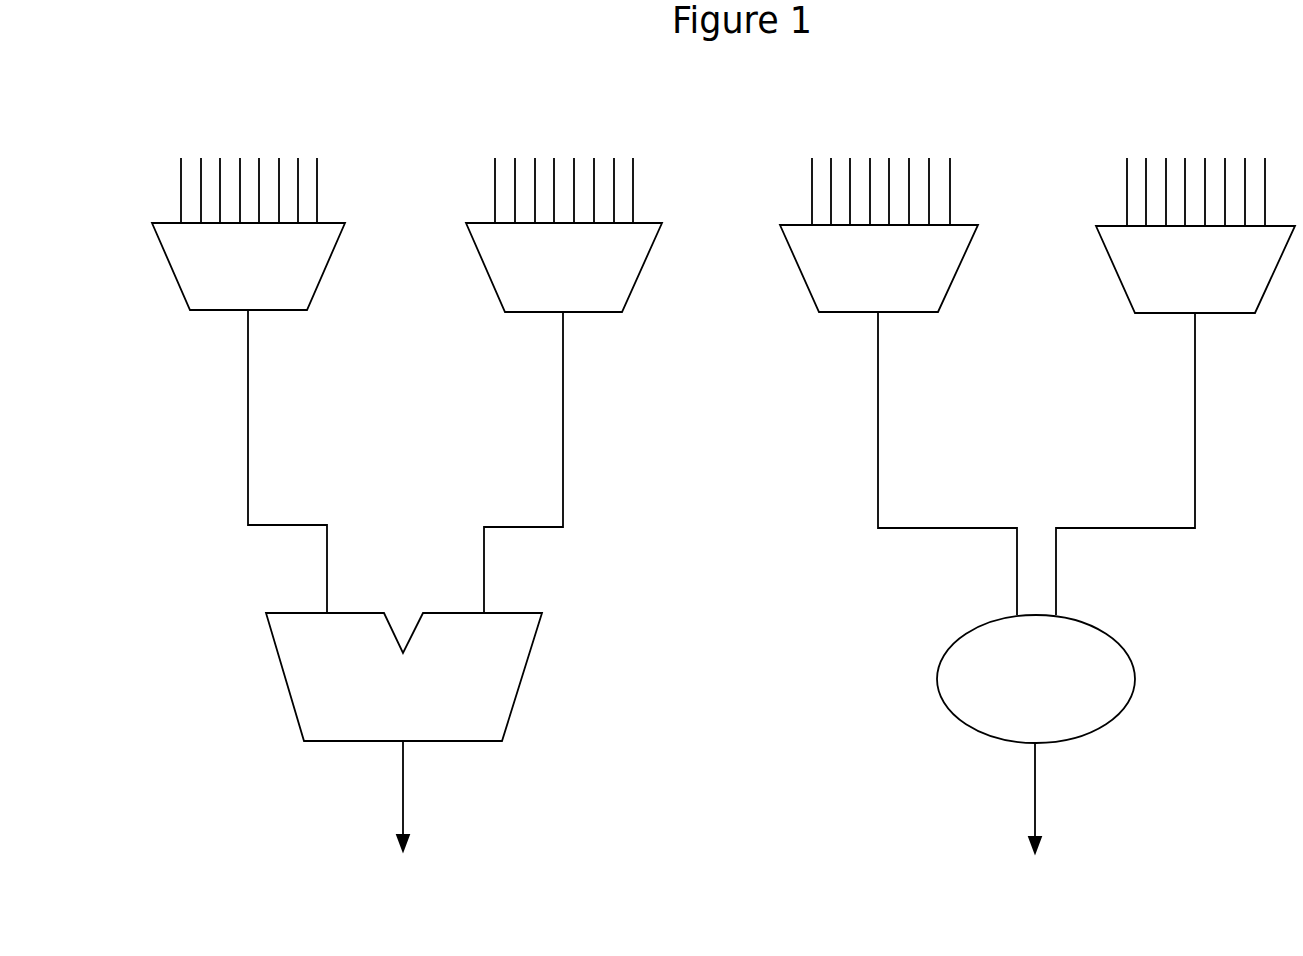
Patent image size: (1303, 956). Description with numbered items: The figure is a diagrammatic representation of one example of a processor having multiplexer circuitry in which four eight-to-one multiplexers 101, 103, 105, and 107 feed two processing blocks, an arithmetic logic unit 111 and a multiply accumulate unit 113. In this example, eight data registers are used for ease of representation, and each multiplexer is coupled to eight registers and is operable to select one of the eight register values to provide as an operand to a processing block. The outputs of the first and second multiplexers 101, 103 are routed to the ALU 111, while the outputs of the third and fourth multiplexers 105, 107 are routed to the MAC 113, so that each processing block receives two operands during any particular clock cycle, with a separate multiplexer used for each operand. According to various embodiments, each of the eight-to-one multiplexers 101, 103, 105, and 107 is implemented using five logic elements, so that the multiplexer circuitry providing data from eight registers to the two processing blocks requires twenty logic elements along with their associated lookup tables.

The 8:1 multiplexer 101 is at (228, 294).
The 8:1 multiplexer 103 is at (544, 295).
The 8:1 multiplexer 105 is at (859, 296).
The 8:1 multiplexer 107 is at (1176, 297).
The arithmetic logic unit 111 is at (414, 692).
The multiply accumulate unit 113 is at (1046, 693).